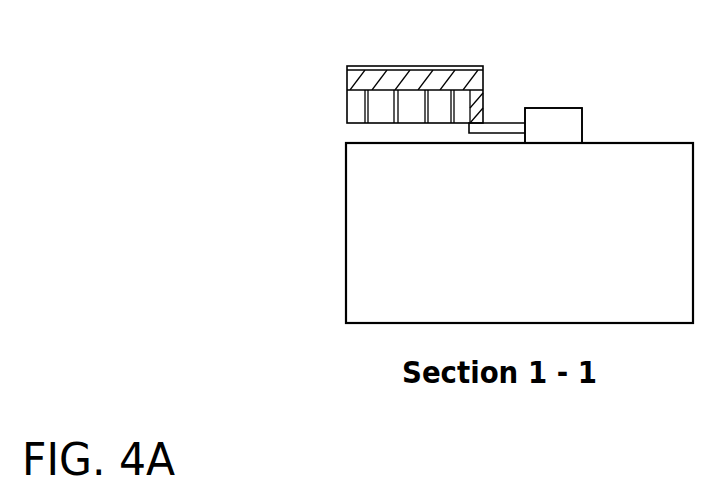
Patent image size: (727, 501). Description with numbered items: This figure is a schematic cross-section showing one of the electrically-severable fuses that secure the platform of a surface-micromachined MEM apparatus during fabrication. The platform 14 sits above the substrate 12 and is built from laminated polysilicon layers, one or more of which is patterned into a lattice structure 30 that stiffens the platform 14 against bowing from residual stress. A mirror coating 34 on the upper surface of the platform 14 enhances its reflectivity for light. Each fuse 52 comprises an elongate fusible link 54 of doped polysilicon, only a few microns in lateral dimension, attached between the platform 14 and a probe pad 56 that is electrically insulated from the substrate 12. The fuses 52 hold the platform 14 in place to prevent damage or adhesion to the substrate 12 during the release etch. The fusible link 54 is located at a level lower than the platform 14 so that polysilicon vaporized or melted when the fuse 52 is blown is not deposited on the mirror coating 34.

The substrate 12 is at (385, 280).
The platform 14 is at (347, 79).
The lattice structure 30 is at (363, 103).
The mirror coating 34 is at (407, 66).
The fuse 52 is at (552, 95).
The fusible link 54 is at (500, 122).
The probe pad 56 is at (564, 133).